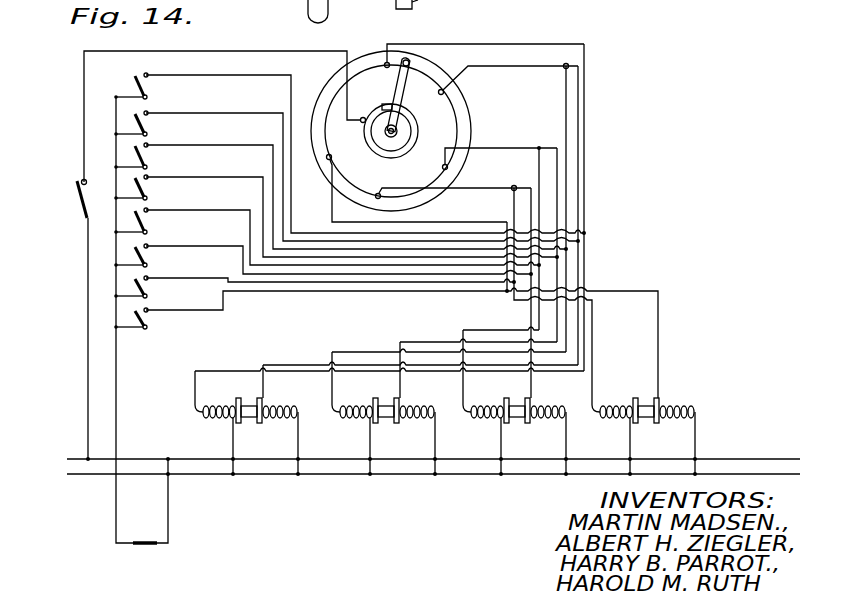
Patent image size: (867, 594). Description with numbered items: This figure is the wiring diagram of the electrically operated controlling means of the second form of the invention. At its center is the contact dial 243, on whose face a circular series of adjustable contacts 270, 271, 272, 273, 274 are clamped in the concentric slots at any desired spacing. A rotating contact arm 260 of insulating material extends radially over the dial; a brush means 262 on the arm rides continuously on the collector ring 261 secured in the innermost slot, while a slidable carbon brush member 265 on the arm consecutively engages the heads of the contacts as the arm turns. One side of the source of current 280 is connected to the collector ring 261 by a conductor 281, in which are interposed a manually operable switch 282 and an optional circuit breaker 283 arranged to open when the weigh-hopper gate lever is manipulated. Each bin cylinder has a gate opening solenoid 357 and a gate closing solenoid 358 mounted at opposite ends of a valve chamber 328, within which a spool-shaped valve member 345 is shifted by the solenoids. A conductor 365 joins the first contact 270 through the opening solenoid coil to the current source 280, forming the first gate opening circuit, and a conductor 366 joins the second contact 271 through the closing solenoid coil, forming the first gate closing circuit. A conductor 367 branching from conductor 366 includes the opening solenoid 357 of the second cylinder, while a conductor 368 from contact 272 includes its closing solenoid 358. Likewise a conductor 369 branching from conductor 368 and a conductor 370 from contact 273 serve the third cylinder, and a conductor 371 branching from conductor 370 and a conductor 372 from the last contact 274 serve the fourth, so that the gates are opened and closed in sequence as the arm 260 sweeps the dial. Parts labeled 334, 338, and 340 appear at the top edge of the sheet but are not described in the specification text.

The contact dial 243 is at (452, 137).
The contact arm 260 is at (415, 97).
The collector ring 261 is at (414, 129).
The brush means 262 is at (383, 106).
The carbon brush member 265 is at (410, 66).
The contact 270 is at (385, 62).
The contact 271 is at (445, 92).
The contact 272 is at (442, 167).
The contact 273 is at (377, 193).
The contact 274 is at (327, 160).
The source of current 280 is at (466, 475).
The conductor 281 is at (84, 92).
The manually operable switch 282 is at (80, 198).
The circuit breaker 283 is at (143, 546).
The valve chamber 328 is at (382, 9).
The element 334 is at (290, 15).
The element 338 is at (414, 0).
The element 340 is at (250, 5).
The valve member 345 is at (252, 406).
The gate opening solenoid 357 is at (214, 419).
The gate closing solenoid 358 is at (286, 419).
The conductor 365 is at (586, 135).
The conductor 366 is at (579, 182).
The conductor 367 is at (568, 213).
The conductor 368 is at (587, 232).
The conductor 369 is at (541, 272).
The conductor 370 is at (534, 290).
The conductor 371 is at (594, 340).
The conductor 372 is at (660, 338).